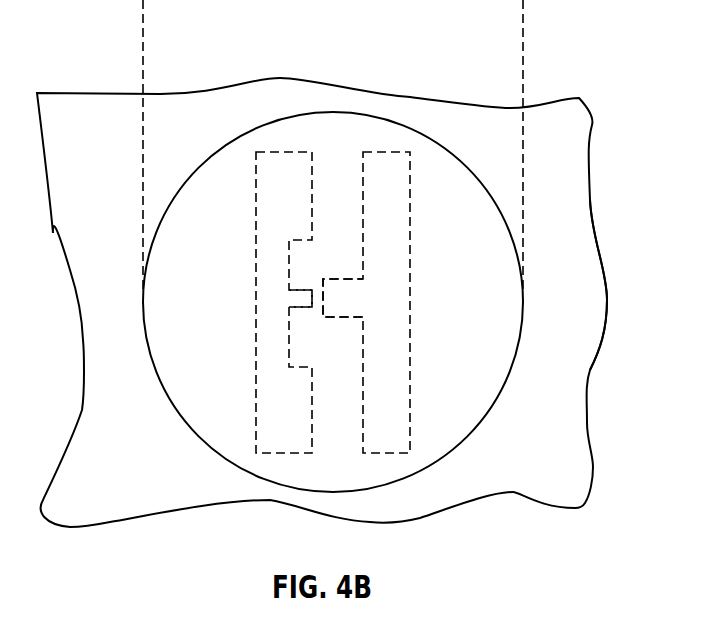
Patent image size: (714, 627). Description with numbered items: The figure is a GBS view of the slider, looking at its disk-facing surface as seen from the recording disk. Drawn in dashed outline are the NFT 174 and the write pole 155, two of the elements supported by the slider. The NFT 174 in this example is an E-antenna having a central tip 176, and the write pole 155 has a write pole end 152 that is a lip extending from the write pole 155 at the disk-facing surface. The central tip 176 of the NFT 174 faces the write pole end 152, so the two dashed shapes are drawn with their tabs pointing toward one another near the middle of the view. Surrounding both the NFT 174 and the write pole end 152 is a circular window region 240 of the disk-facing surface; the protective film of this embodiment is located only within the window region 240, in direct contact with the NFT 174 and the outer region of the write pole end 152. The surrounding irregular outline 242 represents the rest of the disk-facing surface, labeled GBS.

The write pole end 152 is at (323, 307).
The write pole 155 is at (398, 220).
The NFT 174 is at (263, 223).
The central tip 176 is at (308, 298).
The window region 240 is at (447, 149).
The substrate outline 242 is at (573, 150).
The gas bearing surface GBS is at (578, 232).